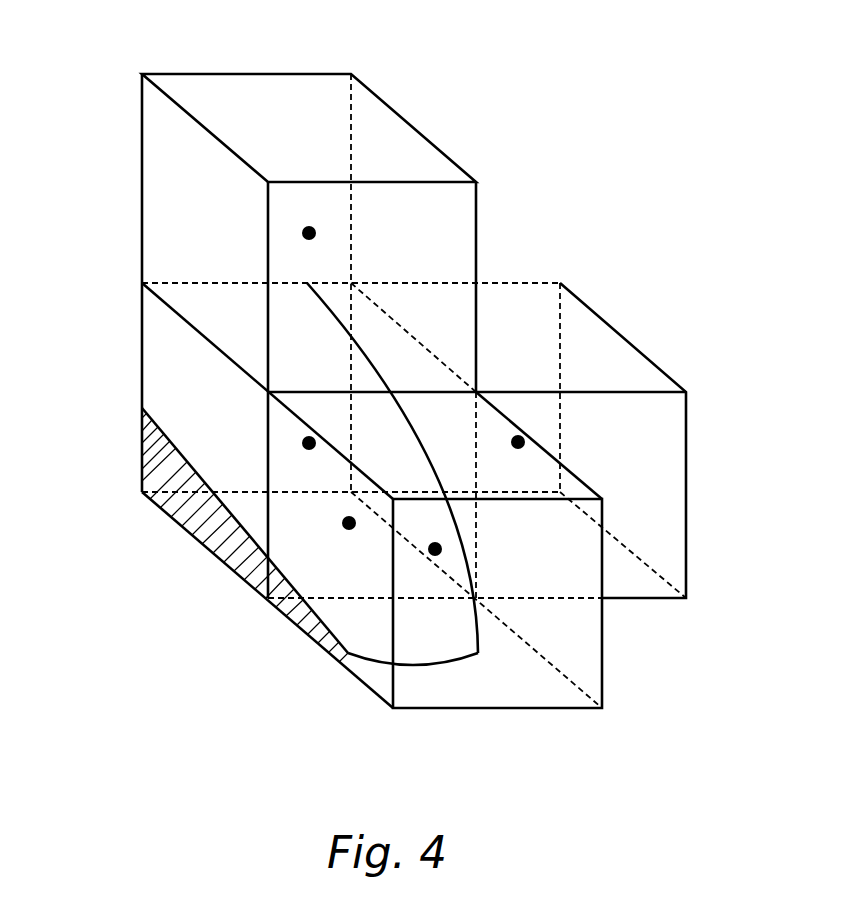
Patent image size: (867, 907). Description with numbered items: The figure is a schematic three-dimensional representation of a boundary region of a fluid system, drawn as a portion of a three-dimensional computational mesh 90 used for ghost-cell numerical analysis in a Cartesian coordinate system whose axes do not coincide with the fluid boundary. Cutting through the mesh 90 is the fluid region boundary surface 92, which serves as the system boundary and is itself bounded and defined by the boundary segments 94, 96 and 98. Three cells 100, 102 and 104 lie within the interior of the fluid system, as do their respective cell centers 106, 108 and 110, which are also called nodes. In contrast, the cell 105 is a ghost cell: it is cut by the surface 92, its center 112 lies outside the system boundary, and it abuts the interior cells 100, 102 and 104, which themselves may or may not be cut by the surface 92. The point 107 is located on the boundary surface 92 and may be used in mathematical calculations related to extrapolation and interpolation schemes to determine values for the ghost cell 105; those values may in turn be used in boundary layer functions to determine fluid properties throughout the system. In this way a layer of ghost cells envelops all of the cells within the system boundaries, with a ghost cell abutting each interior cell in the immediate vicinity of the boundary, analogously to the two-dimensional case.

The 3-dimensional computational mesh 90 is at (566, 124).
The boundary surface 92 is at (330, 488).
The boundary segment 94 is at (184, 448).
The boundary segment 96 is at (456, 488).
The boundary segment 98 is at (415, 413).
The interior cell 100 is at (267, 100).
The interior cell 102 is at (619, 367).
The interior cell 104 is at (525, 682).
The ghost cell 105 is at (207, 367).
The cell center 106 is at (309, 233).
The point on boundary surface 107 is at (349, 523).
The cell center 108 is at (518, 442).
The cell center 110 is at (435, 549).
The cell center 112 is at (309, 443).